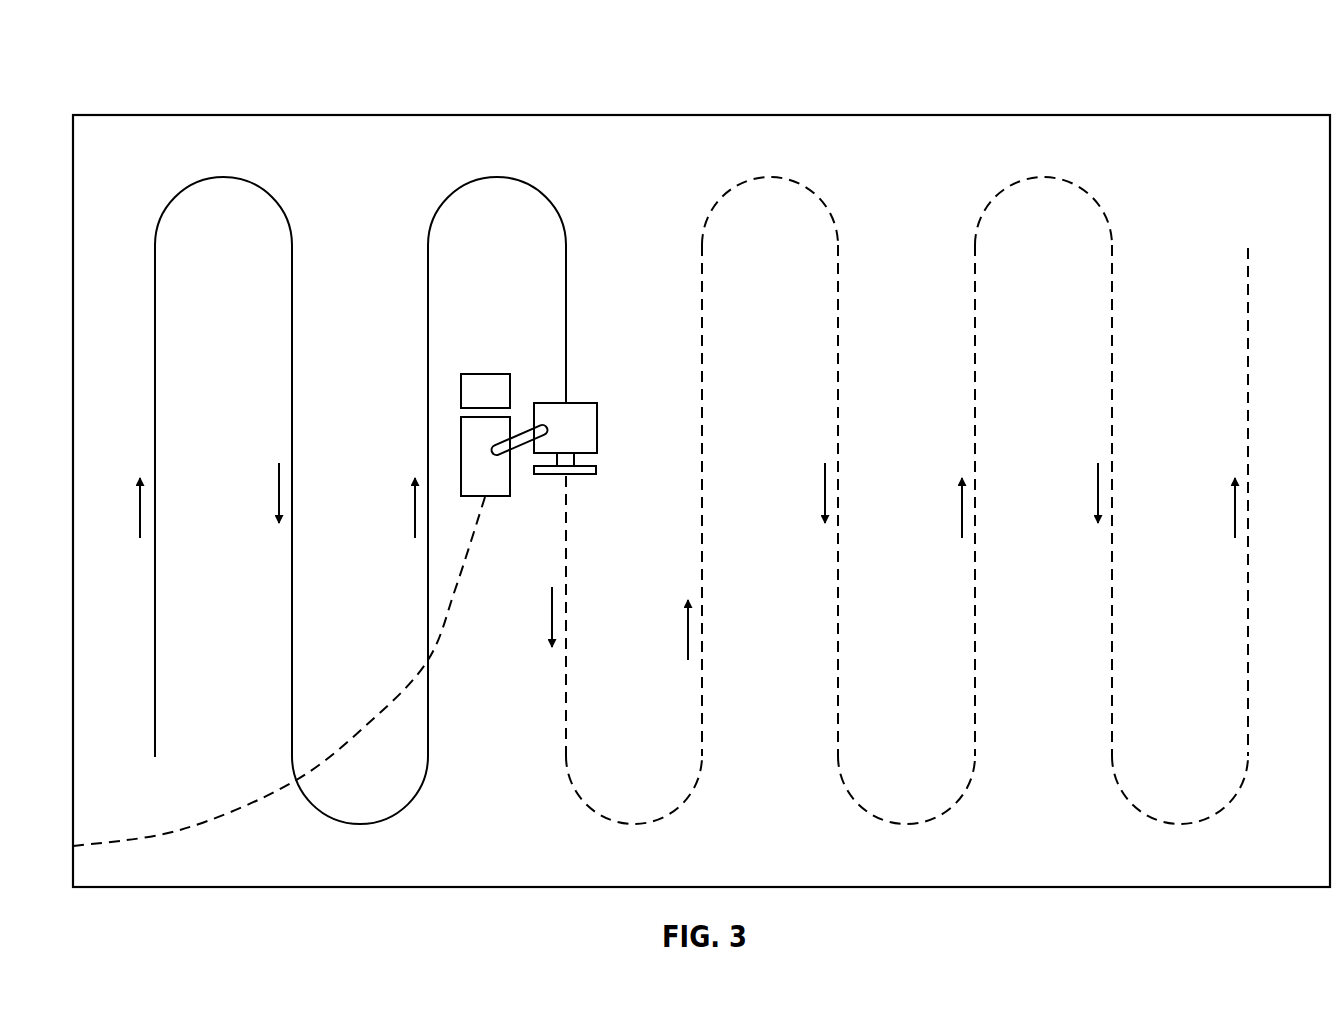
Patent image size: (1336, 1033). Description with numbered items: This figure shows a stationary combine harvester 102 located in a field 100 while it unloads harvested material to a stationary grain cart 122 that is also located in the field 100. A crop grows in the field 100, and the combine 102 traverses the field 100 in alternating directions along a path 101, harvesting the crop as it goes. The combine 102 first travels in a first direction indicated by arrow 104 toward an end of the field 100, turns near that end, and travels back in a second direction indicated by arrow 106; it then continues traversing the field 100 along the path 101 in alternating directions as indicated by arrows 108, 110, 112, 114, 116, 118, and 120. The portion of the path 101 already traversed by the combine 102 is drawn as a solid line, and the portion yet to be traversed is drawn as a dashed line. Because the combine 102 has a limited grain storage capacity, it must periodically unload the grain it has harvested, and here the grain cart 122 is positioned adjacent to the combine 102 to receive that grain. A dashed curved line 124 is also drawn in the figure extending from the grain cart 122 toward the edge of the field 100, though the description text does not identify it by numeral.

The field 100 is at (1214, 73).
The path 101 is at (225, 177).
The combine harvester 102 is at (580, 403).
The arrow 104 is at (140, 510).
The arrow 106 is at (279, 500).
The arrow 108 is at (415, 500).
The arrow 110 is at (552, 628).
The arrow 112 is at (688, 622).
The arrow 114 is at (825, 500).
The arrow 116 is at (962, 500).
The arrow 118 is at (1098, 500).
The arrow 120 is at (1235, 500).
The grain cart 122 is at (485, 374).
The travel path of camera 124 is at (393, 707).